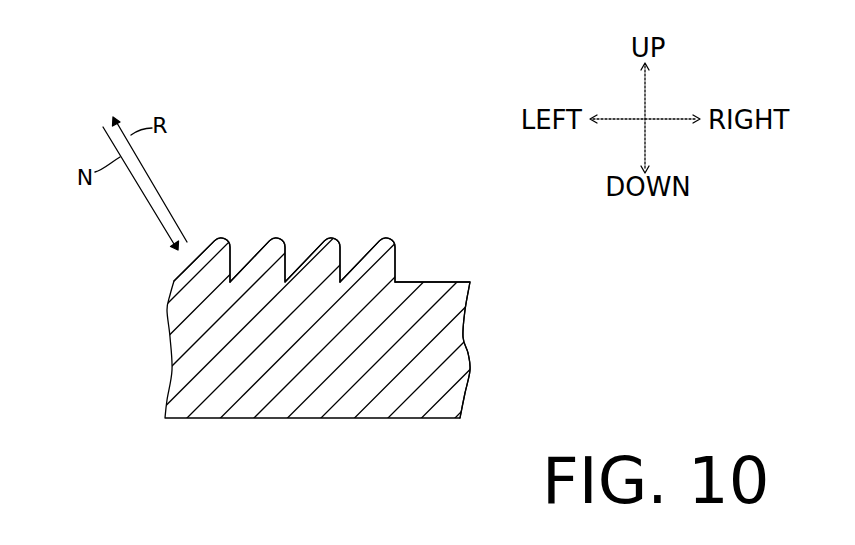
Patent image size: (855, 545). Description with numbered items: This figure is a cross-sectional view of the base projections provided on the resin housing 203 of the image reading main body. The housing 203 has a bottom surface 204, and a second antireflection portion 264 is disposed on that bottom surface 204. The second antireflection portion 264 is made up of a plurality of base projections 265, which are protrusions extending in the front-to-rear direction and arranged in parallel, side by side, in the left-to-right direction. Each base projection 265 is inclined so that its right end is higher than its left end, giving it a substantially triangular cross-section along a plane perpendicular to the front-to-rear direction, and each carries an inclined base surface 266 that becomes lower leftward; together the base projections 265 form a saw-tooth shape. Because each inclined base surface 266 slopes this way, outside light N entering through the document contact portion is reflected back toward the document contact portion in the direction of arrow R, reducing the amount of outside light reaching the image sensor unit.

The housing 203 is at (270, 385).
The bottom surface 204 is at (433, 276).
The second antireflection portion 264 is at (232, 227).
The base projections 265 is at (275, 248).
The inclined base surface 266 is at (363, 245).